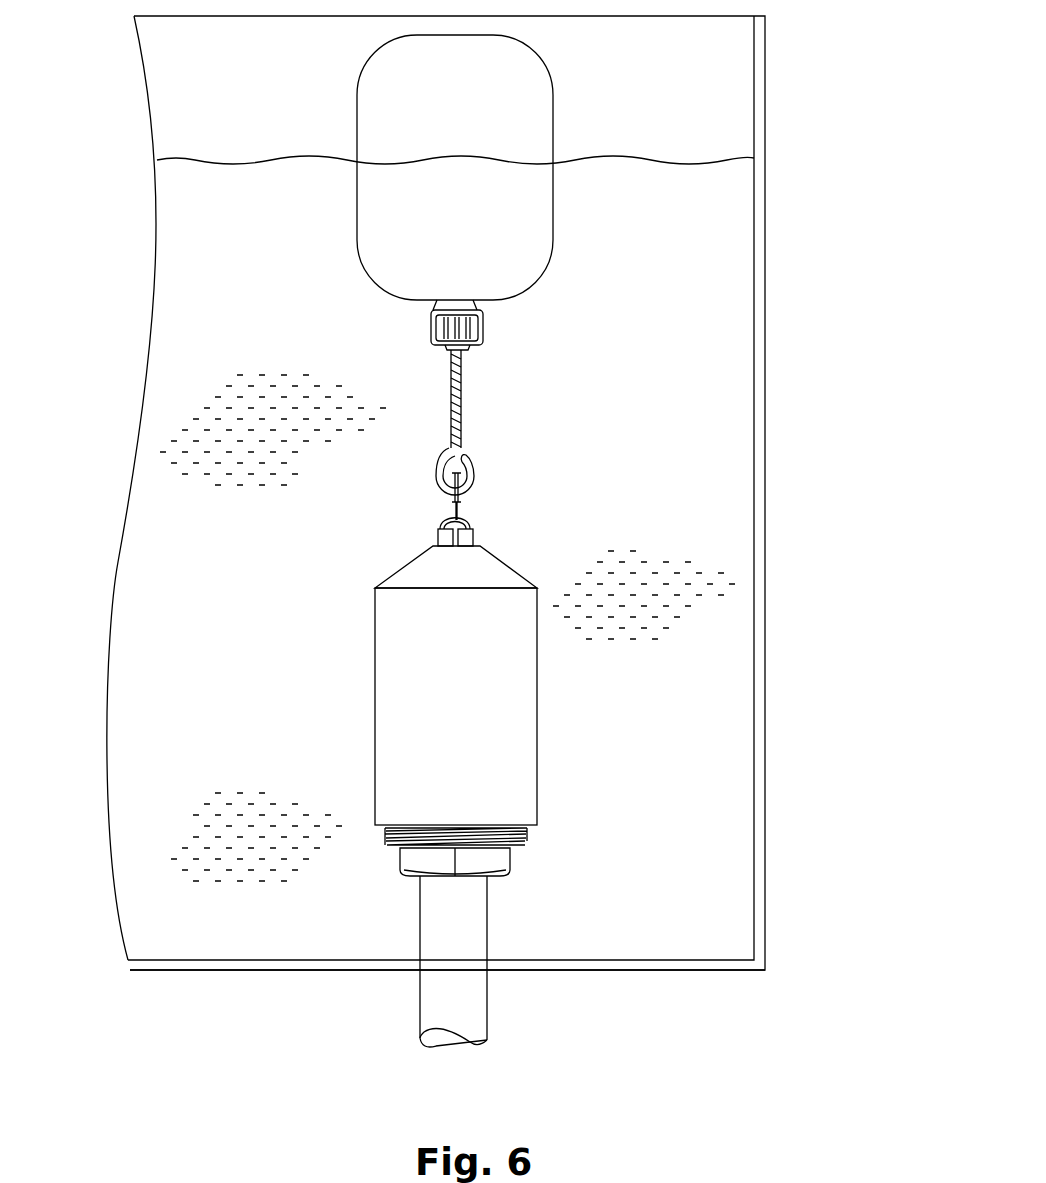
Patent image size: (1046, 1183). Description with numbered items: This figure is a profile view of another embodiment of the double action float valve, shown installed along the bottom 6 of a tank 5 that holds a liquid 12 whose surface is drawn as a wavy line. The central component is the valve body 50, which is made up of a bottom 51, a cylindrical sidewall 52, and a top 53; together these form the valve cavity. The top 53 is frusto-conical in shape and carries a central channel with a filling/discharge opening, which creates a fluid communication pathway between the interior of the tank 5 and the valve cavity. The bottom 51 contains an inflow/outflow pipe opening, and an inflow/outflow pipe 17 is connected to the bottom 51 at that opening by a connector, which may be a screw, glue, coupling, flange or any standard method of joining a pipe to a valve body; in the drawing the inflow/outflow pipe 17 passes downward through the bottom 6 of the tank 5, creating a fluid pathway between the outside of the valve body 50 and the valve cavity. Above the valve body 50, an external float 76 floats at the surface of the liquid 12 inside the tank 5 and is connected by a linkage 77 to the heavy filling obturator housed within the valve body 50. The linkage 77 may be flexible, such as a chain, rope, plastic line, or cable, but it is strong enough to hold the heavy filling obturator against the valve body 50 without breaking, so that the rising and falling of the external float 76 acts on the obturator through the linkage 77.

The tank 5 is at (765, 413).
The bottom 6 is at (688, 970).
The liquid 12 is at (271, 310).
The inflow/outflow pipe 17 is at (487, 922).
The valve body 50 is at (441, 689).
The bottom 51 is at (508, 862).
The cylindrical sidewall 52 is at (537, 687).
The top 53 is at (410, 562).
The external float 76 is at (553, 217).
The linkage 77 is at (460, 495).